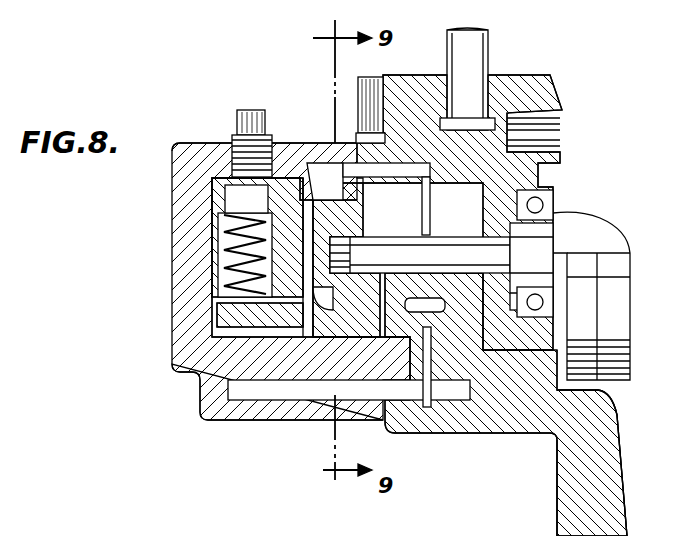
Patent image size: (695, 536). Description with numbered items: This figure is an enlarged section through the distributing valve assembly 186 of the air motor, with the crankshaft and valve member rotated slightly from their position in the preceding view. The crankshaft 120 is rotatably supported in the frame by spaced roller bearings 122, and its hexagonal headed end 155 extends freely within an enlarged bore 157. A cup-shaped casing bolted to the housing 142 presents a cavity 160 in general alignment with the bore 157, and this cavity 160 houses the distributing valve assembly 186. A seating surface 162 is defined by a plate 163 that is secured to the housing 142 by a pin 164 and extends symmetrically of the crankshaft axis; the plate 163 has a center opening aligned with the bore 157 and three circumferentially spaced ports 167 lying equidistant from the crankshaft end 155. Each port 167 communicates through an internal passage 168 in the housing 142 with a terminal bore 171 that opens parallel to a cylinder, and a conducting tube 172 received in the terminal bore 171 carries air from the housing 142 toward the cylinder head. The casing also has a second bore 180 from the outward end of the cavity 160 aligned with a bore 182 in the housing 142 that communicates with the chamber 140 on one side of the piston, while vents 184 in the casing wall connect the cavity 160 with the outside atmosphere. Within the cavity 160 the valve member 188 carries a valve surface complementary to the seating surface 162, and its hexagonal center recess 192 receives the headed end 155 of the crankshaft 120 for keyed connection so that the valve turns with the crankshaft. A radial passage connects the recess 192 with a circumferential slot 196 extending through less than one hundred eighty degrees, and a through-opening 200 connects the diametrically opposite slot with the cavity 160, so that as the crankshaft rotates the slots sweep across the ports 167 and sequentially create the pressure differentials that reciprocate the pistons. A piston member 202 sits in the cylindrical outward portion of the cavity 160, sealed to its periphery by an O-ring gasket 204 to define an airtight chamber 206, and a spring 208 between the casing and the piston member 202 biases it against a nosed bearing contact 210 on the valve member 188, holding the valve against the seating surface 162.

The crankshaft 120 is at (612, 228).
The roller bearings 122 is at (557, 210).
The chamber 140 is at (563, 378).
The housing 142 is at (565, 130).
The headed end of the crankshaft 155 is at (472, 220).
The enlarged bore 157 is at (448, 240).
The cavity 160 is at (257, 392).
The seating surface 162 is at (353, 400).
The plate 163 is at (382, 340).
The pin 164 is at (480, 405).
The ports 167 is at (413, 75).
The internal passage 168 is at (480, 155).
The terminal bore 171 is at (500, 88).
The conducting tube 172 is at (487, 56).
The second bore 180 is at (317, 398).
The bore 182 is at (483, 405).
The vents 184 is at (310, 200).
The distributing valve assembly 186 is at (172, 283).
The valve member 188 is at (318, 398).
The center recess 192 is at (387, 250).
The circumferential slot 196 is at (310, 340).
The through-opening 200 is at (347, 195).
The piston member 202 is at (232, 202).
The O-ring gasket 204 is at (300, 185).
The airtight chamber 206 is at (222, 308).
The spring 208 is at (212, 250).
The nosed bearing contact 210 is at (232, 180).